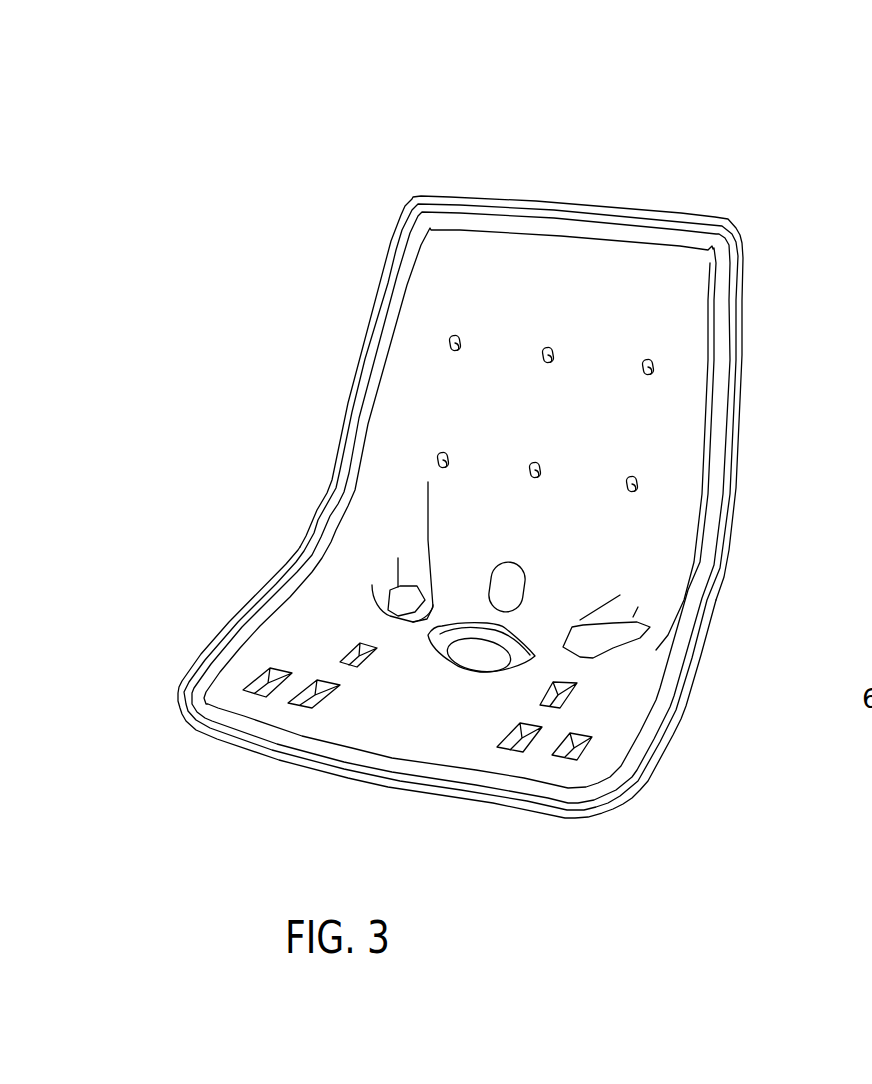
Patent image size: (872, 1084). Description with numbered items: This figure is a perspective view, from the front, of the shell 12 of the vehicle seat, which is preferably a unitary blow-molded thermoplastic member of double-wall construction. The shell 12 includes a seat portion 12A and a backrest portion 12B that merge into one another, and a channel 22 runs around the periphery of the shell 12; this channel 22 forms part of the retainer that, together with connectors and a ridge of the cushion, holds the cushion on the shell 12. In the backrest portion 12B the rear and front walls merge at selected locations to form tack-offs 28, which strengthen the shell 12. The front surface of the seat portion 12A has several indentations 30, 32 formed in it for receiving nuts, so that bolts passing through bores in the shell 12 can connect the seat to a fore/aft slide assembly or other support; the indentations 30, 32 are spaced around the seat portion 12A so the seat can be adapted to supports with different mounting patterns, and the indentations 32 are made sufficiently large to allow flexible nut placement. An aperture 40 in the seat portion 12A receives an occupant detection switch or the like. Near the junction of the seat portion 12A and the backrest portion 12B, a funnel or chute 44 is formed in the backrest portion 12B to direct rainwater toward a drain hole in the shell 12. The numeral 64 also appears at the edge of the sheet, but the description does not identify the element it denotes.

The shell 12 is at (530, 158).
The seat portion 12A is at (656, 741).
The backrest portion 12B is at (743, 296).
The channel 22 is at (193, 668).
The tack-offs 28 is at (531, 465).
The indentations 30 is at (554, 758).
The indentations 32 is at (560, 643).
The aperture 40 is at (545, 660).
The funnel or chute 44 is at (527, 590).
The reference element 64 is at (861, 528).